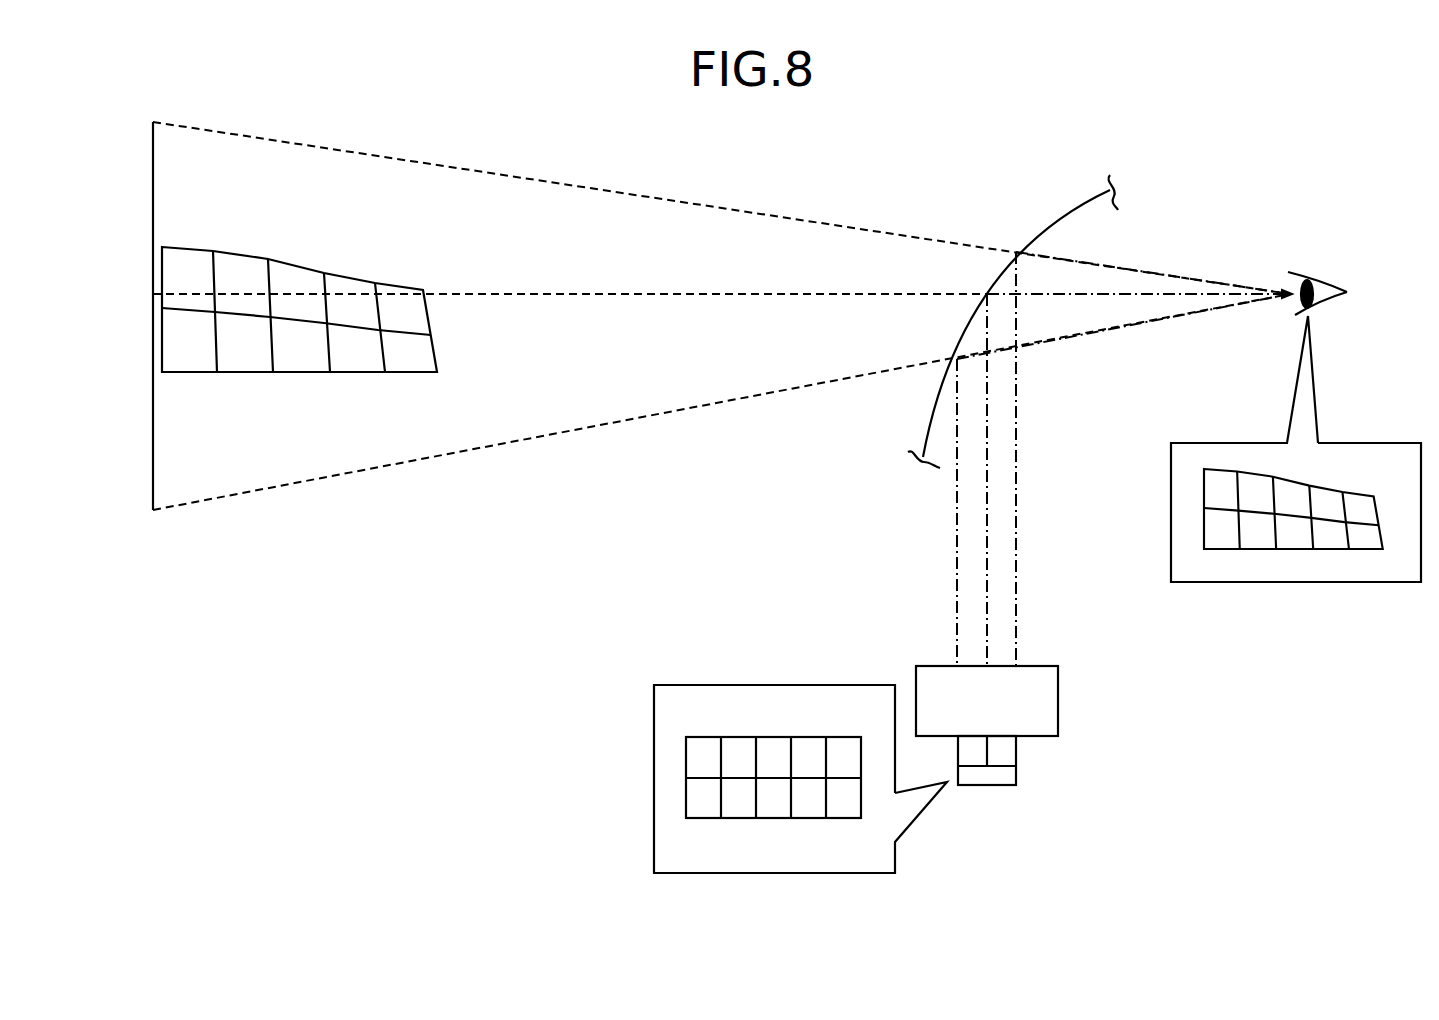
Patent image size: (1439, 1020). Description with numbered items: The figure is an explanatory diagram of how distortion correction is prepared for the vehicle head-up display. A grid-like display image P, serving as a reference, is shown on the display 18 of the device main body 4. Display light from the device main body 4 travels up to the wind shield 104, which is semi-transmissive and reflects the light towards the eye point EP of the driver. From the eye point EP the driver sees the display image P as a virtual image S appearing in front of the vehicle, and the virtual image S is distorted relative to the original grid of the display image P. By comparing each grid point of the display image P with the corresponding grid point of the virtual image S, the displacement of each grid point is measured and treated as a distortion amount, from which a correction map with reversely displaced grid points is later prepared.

The wind shield 104 is at (1052, 218).
The eye point EP is at (1291, 284).
The device main body 4 is at (1072, 700).
The display 18 is at (1017, 773).
The display image P is at (686, 760).
The virtual image S is at (151, 174).